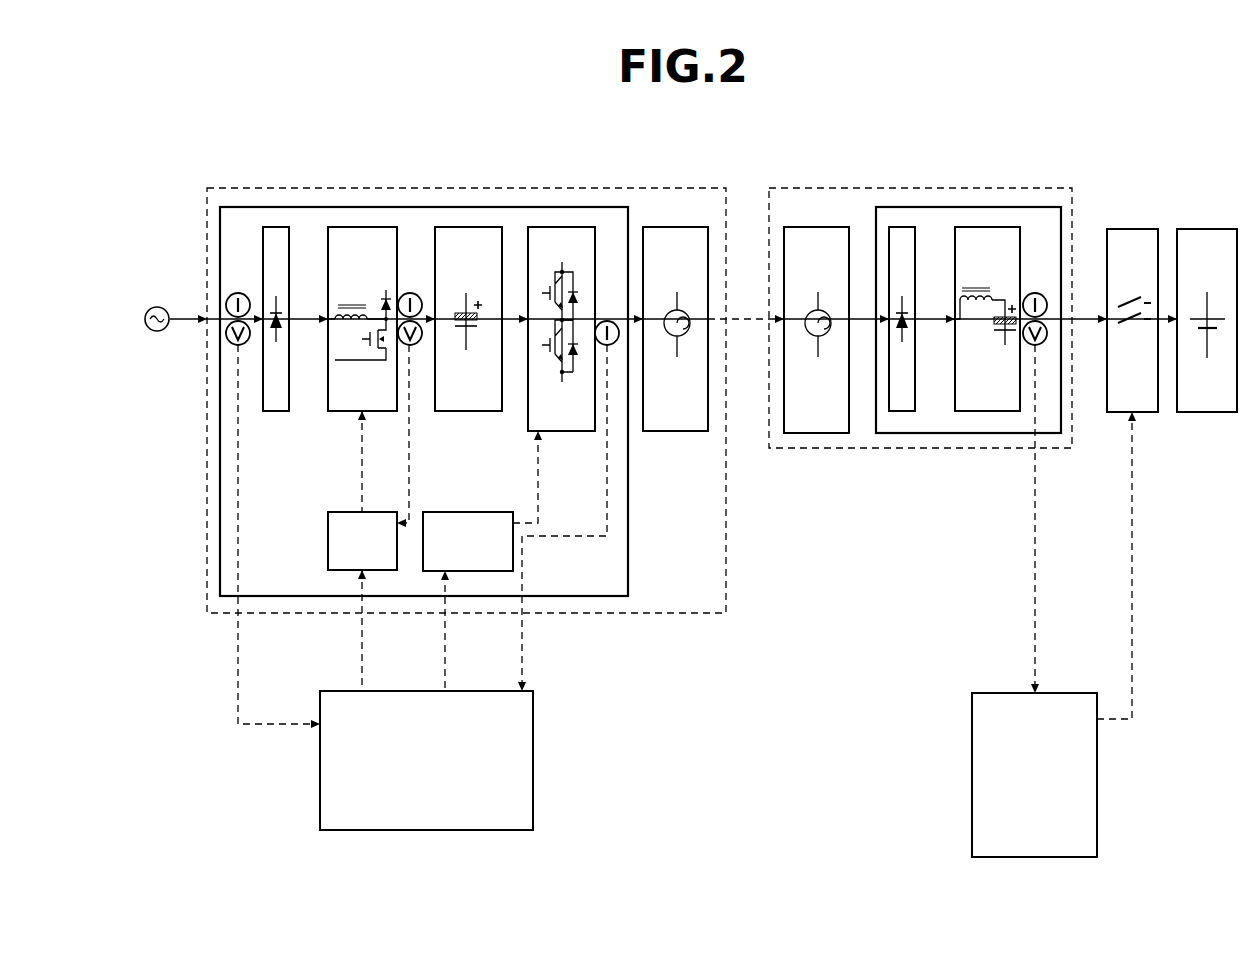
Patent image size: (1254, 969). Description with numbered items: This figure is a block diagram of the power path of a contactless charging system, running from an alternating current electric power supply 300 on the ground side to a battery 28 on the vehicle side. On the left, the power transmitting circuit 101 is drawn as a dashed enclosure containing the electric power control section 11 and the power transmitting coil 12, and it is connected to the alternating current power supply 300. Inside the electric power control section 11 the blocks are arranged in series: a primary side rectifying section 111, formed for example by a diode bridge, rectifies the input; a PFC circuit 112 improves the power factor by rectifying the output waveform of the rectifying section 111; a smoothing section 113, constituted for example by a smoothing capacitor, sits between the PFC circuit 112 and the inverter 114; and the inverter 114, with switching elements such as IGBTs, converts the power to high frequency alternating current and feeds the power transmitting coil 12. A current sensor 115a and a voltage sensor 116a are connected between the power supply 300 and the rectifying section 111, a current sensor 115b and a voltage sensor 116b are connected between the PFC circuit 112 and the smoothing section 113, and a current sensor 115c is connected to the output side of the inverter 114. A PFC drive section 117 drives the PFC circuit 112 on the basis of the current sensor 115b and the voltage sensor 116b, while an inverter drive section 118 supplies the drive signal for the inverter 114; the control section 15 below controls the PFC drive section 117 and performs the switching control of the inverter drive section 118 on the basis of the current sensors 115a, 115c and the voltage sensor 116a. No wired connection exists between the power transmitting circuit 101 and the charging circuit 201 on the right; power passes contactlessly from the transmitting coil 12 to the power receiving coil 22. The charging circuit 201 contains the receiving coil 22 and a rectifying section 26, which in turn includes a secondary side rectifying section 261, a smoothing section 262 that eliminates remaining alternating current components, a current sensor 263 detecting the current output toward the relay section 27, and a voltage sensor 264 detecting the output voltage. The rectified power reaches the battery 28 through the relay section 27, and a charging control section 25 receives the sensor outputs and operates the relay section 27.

The alternating current electric power supply 300 is at (160, 307).
The power transmitting circuit 101 is at (215, 613).
The electric power control section 11 is at (239, 207).
The primary side rectifying section 111 is at (280, 227).
The PFC circuit 112 is at (376, 227).
The smoothing section 113 is at (488, 227).
The inverter 114 is at (552, 227).
The power transmitting coil 12 is at (672, 227).
The current sensor 115a is at (225, 297).
The current sensor 115b is at (410, 293).
The current sensor 115c is at (610, 345).
The voltage sensor 116a is at (234, 340).
The voltage sensor 116b is at (413, 345).
The PFC drive section 117 is at (328, 542).
The inverter drive section 118 is at (470, 571).
The control section 15 is at (426, 760).
The charging circuit 201 is at (940, 188).
The power receiving coil 22 is at (797, 227).
The rectifying section 26 is at (1046, 207).
The secondary side rectifying section 261 is at (895, 227).
The smoothing section 262 is at (998, 227).
The current sensor 263 is at (1038, 293).
The voltage sensor 264 is at (1045, 342).
The relay section 27 is at (1143, 229).
The battery 28 is at (1216, 229).
The charging control section 25 is at (1034, 775).